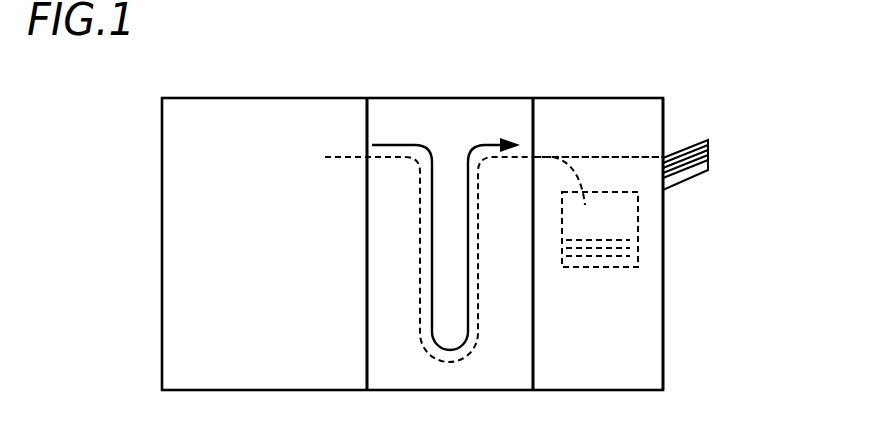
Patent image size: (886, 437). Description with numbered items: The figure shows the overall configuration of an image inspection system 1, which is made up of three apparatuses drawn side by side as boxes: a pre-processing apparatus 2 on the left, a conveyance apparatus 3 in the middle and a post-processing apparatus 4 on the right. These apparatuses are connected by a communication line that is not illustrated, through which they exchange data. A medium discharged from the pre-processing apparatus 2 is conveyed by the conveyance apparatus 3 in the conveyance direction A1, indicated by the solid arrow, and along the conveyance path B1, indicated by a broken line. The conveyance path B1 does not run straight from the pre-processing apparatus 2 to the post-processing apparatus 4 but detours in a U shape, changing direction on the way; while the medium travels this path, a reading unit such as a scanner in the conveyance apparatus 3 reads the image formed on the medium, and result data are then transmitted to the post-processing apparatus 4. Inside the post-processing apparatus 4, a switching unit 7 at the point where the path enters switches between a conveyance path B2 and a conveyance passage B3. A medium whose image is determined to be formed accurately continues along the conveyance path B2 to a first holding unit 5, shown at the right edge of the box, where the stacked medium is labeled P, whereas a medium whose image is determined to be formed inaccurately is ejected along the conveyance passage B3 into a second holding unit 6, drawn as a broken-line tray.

The image inspection system 1 is at (150, 175).
The pre-processing apparatus 2 is at (330, 377).
The conveyance apparatus 3 is at (499, 377).
The post-processing apparatus 4 is at (630, 377).
The first holding unit 5 is at (690, 177).
The second holding unit 6 is at (600, 267).
The switching unit 7 is at (550, 150).
The conveyance direction A1 is at (393, 146).
The conveyance path B1 is at (481, 258).
The conveyance path B2 is at (586, 153).
The conveyance passage B3 is at (583, 205).
The medium P is at (681, 163).